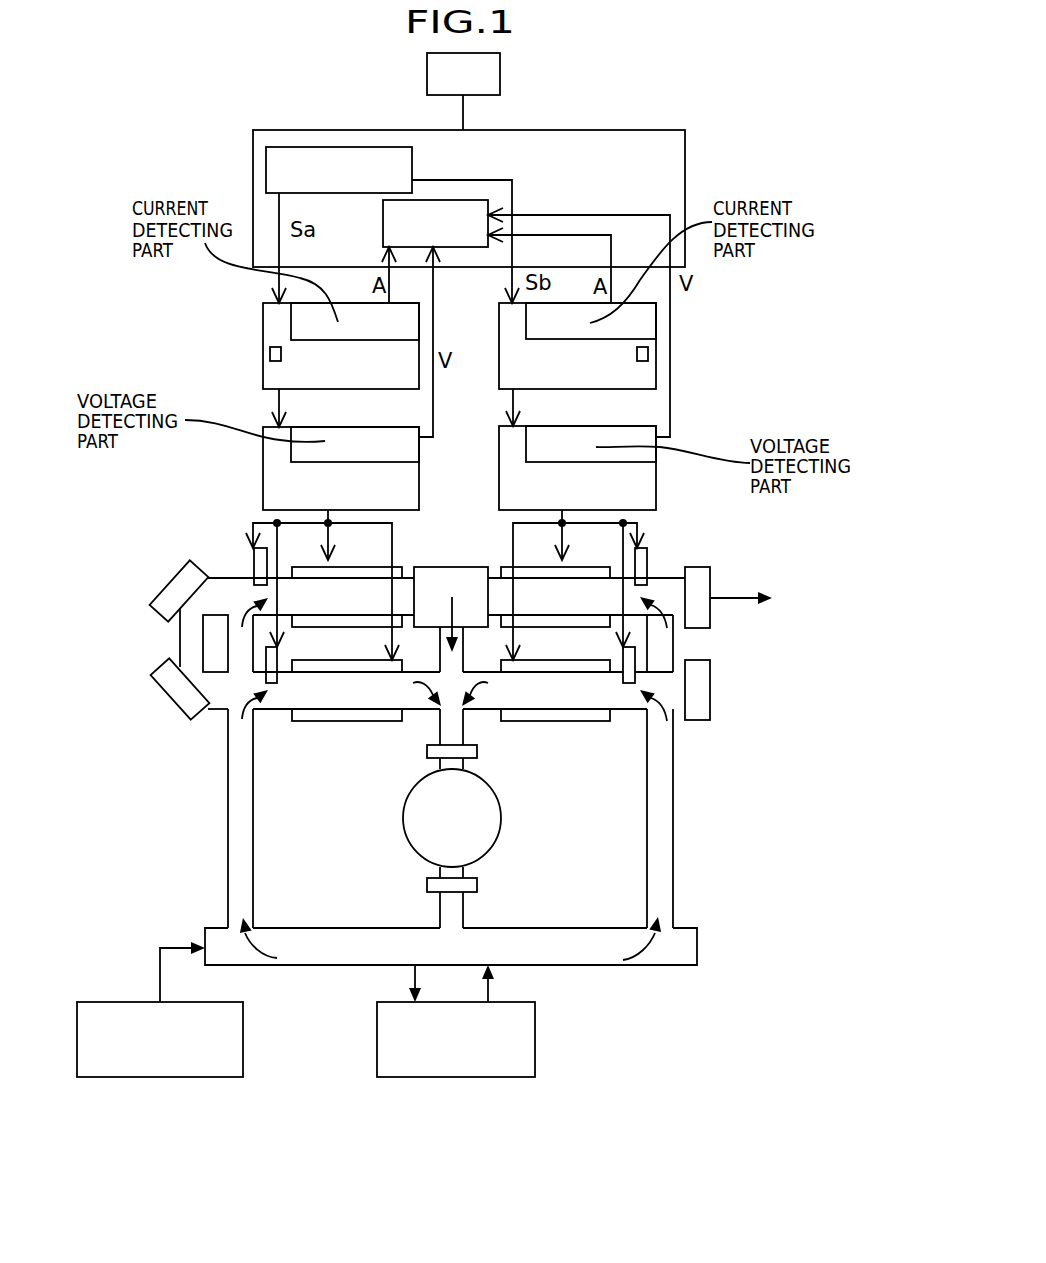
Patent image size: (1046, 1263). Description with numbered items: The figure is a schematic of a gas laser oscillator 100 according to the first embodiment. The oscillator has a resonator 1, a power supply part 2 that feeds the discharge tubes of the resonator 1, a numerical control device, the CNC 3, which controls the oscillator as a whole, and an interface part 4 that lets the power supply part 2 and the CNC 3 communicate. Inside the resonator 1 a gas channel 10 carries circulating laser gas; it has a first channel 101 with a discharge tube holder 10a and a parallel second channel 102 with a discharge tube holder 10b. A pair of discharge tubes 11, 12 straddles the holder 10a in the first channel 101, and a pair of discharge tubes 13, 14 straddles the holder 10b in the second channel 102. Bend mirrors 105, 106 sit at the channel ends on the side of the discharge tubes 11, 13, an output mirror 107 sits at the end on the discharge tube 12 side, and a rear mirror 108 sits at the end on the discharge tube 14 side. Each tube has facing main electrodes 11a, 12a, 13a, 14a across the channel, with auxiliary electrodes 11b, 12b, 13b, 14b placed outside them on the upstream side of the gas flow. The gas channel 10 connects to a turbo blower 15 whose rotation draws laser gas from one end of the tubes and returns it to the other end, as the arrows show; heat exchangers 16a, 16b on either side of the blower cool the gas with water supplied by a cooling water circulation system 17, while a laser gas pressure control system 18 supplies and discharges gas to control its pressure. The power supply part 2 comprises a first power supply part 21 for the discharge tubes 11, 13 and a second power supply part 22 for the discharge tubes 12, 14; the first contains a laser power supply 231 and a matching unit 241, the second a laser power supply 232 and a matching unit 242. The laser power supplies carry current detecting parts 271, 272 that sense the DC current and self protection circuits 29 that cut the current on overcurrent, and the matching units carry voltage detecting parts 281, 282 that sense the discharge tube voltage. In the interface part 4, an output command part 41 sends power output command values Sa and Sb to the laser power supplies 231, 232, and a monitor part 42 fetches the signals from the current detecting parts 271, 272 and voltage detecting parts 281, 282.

The resonator 1 is at (731, 789).
The power supply part 2 is at (757, 409).
The numerical control device (CNC) 3 is at (502, 68).
The interface part 4 is at (685, 190).
The gas channel 10 is at (673, 947).
The discharge tube holder 10a is at (451, 565).
The discharge tube holder 10b is at (452, 673).
The discharge tube 11 is at (299, 591).
The main electrode 11a is at (310, 627).
The auxiliary electrode 11b is at (253, 565).
The discharge tube 12 is at (592, 584).
The main electrode 12a is at (540, 627).
The auxiliary electrode 12b is at (648, 552).
The discharge tube 13 is at (285, 716).
The main electrode 13a is at (308, 722).
The auxiliary electrode 13b is at (265, 677).
The discharge tube 14 is at (621, 705).
The main electrode 14a is at (520, 722).
The auxiliary electrode 14b is at (635, 657).
The turbo blower 15 is at (501, 818).
The heat exchanger 16a is at (477, 750).
The heat exchanger 16b is at (477, 885).
The cooling water circulation system 17 is at (458, 1078).
The laser gas pressure control system 18 is at (152, 1078).
The first power supply part 21 is at (190, 349).
The second power supply part 22 is at (748, 350).
The self protection circuit 29 is at (270, 355).
The output command part 41 is at (266, 173).
The monitor part 42 is at (462, 249).
The gas laser oscillator 100 is at (749, 87).
The first channel 101 is at (668, 577).
The second channel 102 is at (623, 702).
The bend mirror 105 is at (172, 583).
The bend mirror 106 is at (165, 663).
The output mirror 107 is at (712, 580).
The rear mirror 108 is at (712, 695).
The laser power supply 231 is at (263, 388).
The laser power supply 232 is at (656, 380).
The matching unit 241 is at (263, 489).
The matching unit 242 is at (656, 488).
The current detecting part 271 is at (291, 322).
The current detecting part 272 is at (656, 323).
The voltage detecting part 281 is at (291, 452).
The voltage detecting part 282 is at (656, 445).